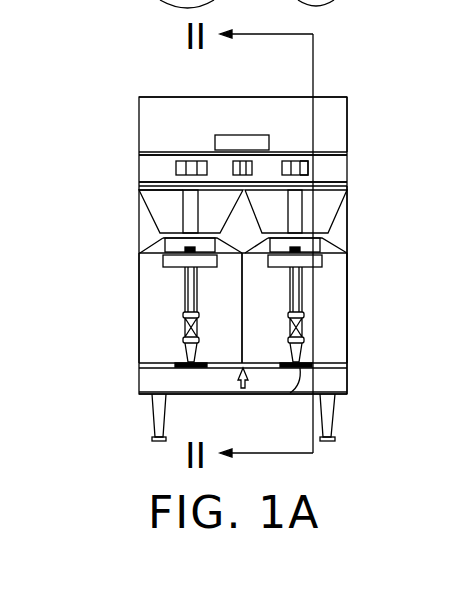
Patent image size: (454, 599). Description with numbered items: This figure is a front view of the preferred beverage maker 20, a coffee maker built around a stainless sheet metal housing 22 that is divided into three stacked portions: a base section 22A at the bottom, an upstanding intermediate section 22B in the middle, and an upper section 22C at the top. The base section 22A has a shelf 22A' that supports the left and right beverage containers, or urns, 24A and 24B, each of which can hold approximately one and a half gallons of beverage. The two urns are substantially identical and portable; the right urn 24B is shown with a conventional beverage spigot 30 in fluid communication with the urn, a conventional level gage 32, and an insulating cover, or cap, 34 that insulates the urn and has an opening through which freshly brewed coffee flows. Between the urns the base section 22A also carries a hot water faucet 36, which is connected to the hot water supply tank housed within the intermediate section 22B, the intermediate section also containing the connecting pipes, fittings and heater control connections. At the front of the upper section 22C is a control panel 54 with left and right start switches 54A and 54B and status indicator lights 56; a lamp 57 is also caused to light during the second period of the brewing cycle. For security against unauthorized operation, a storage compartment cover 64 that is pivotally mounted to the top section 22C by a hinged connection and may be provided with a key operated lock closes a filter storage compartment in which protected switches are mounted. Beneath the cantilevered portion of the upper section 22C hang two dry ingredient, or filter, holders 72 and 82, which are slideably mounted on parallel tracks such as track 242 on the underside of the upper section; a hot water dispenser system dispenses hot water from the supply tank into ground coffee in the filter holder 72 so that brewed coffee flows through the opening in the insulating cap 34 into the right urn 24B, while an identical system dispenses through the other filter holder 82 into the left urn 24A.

The beverage maker 20 is at (356, 170).
The housing 22 is at (333, 237).
The base section 22A is at (287, 379).
The shelf 22A' is at (290, 352).
The intermediate section 22B is at (346, 253).
The upper section 22C is at (330, 117).
The left beverage container 24A is at (158, 312).
The right beverage container 24B is at (328, 328).
The beverage spigot 30 is at (300, 370).
The level gage 32 is at (303, 273).
The insulating cover 34 is at (150, 250).
The hot water faucet 36 is at (242, 394).
The control panel 54 is at (153, 168).
The left start switch 54A is at (177, 163).
The right start switch 54B is at (291, 162).
The status indicator lights 56 is at (234, 163).
The lamp 57 is at (306, 165).
The storage compartment cover 64 is at (175, 97).
The filter holder 72 is at (322, 218).
The filter holder 82 is at (163, 213).
The track 242 is at (140, 192).